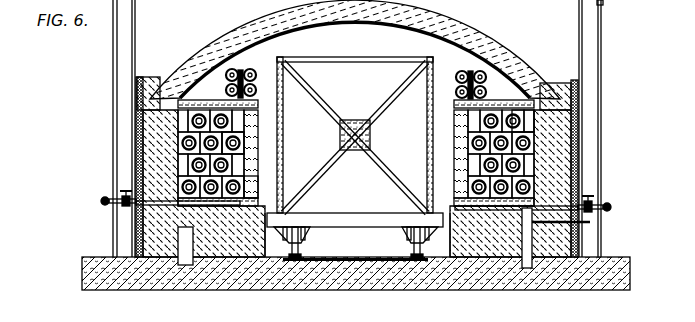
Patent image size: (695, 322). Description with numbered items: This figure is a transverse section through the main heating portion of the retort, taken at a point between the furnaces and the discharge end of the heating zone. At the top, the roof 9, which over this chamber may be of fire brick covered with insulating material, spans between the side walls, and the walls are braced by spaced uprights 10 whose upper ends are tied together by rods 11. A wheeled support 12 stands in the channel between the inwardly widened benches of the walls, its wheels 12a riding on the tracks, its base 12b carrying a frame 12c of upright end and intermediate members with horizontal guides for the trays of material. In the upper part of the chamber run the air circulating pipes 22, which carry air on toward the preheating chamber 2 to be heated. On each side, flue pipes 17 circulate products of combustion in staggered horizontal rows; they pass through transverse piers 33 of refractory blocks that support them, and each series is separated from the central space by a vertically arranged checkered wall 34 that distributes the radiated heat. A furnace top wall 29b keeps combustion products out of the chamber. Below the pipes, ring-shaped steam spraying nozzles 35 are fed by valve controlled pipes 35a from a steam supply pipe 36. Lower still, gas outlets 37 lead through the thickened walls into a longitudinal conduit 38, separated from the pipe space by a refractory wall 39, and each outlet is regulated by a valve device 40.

The preheating chamber 2 is at (258, 177).
The roof 9 is at (374, 23).
The uprights 10 is at (116, 72).
The rods 11 is at (169, 0).
The wheeled supports 12 is at (357, 157).
The wheels 12a is at (292, 252).
The base 12b is at (360, 223).
The frame 12c is at (329, 70).
The flue pipes 17 is at (234, 142).
The air circulating pipes 22 is at (253, 65).
The top wall 29b is at (515, 100).
The transverse piers 33 is at (530, 175).
The checkered wall 34 is at (258, 168).
The steam spraying nozzles 35 is at (207, 206).
The valve controlled pipe 35a is at (134, 208).
The steam supply pipe 36 is at (102, 199).
The outlets 37 is at (507, 210).
The conduit 38 is at (527, 270).
The refractory wall 39 is at (183, 160).
The valve device 40 is at (588, 230).